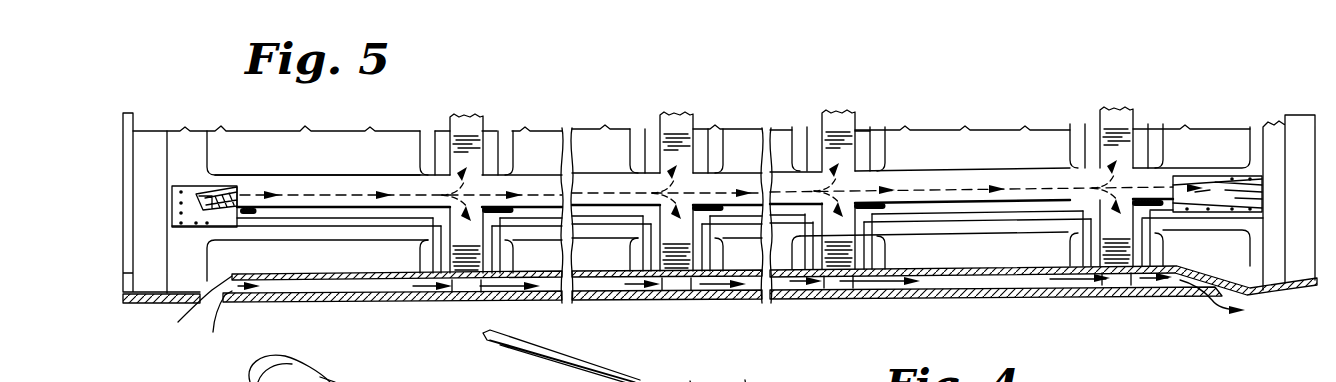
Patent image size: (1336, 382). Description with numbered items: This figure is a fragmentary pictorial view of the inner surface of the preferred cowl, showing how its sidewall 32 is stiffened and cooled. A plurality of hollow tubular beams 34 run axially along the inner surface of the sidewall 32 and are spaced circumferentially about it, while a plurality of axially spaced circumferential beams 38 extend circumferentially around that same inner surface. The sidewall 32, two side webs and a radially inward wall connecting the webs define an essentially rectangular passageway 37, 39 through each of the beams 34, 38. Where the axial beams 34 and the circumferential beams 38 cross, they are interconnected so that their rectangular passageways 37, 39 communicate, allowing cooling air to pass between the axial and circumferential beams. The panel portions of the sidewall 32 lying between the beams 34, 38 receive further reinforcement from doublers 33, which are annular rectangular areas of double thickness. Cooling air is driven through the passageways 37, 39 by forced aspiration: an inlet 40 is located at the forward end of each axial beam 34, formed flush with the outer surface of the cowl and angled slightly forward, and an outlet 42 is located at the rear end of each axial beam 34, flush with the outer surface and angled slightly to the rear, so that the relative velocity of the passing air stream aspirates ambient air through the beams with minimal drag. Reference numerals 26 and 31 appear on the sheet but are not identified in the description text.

In FIG. 5, the sidewall 32 is at (541, 144).
In FIG. 5, the doublers 33 is at (501, 140).
In FIG. 5, the hollow tubular beams 34 is at (1013, 170).
In FIG. 4, the hollow tubular beams 34 is at (653, 380).
In FIG. 5, the rectangular passageway 37 is at (914, 188).
In FIG. 5, the circumferential beams 38 is at (1114, 128).
In FIG. 4, the circumferential beams 38 is at (693, 371).
In FIG. 5, the rectangular passageway 39 is at (673, 140).
In FIG. 5, the inlet 40 is at (212, 197).
In FIG. 5, the outlet 42 is at (1203, 190).
In FIG. 4, the nozzle body 26 is at (359, 370).
In FIG. 4, the mounting rail 31 is at (746, 373).